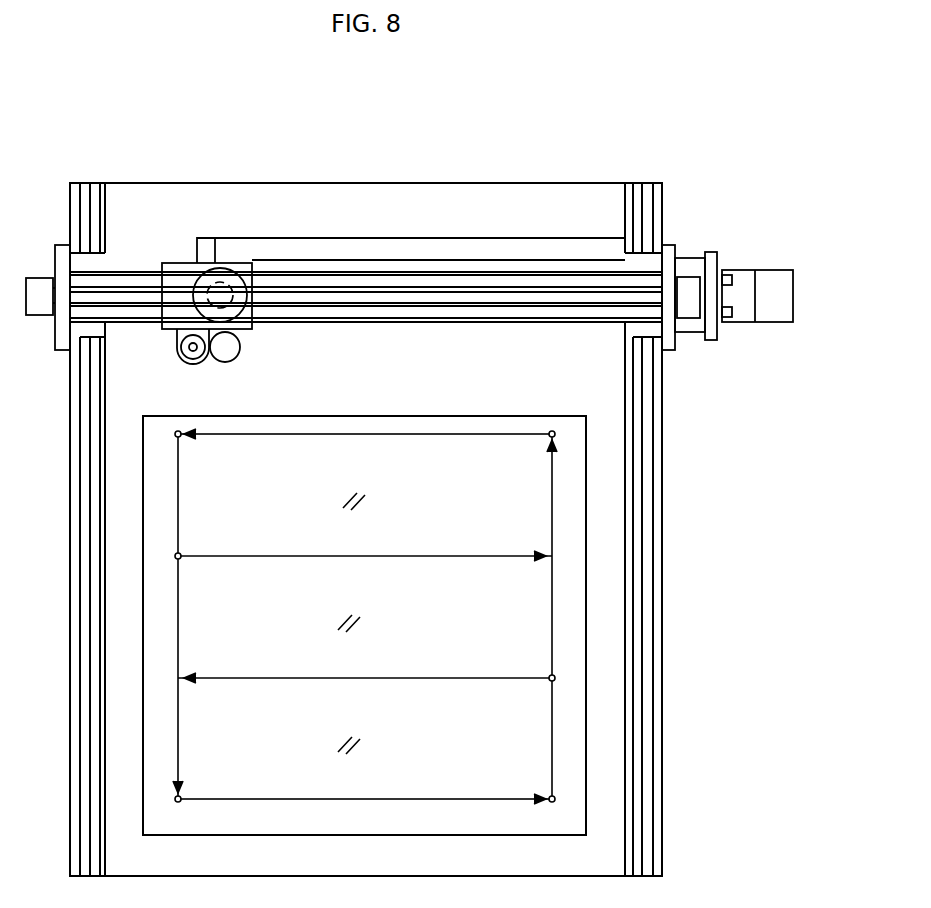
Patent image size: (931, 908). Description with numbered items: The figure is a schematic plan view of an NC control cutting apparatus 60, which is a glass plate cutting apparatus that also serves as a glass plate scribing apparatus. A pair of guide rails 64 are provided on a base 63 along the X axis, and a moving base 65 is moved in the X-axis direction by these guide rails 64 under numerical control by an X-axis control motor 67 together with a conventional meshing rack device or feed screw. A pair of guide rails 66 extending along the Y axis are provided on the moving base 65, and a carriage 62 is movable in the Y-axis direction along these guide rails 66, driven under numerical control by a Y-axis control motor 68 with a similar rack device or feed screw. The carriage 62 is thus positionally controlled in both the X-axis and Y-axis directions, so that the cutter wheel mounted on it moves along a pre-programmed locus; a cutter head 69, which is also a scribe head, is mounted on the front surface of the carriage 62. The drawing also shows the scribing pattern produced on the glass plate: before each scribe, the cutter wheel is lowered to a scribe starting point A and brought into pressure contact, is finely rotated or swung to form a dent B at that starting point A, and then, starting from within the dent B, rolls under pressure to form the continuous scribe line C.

The NC control cutting apparatus 60 is at (655, 181).
The carriage 62 is at (177, 273).
The base 63 is at (662, 513).
The guide rails 64 is at (85, 464).
The moving base 65 is at (349, 275).
The guide rails 66 is at (390, 285).
The X-axis control motor 67 is at (775, 290).
The Y-axis control motor 68 is at (223, 277).
The cutter head 69 is at (178, 338).
The scribe starting point A is at (555, 433).
The dent B is at (555, 435).
The scribe line C is at (300, 434).